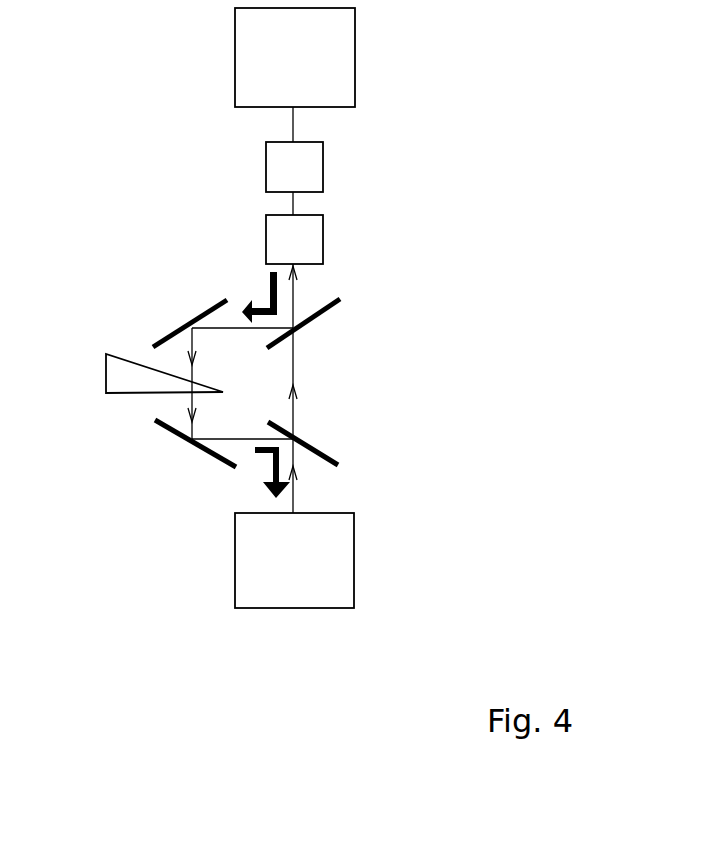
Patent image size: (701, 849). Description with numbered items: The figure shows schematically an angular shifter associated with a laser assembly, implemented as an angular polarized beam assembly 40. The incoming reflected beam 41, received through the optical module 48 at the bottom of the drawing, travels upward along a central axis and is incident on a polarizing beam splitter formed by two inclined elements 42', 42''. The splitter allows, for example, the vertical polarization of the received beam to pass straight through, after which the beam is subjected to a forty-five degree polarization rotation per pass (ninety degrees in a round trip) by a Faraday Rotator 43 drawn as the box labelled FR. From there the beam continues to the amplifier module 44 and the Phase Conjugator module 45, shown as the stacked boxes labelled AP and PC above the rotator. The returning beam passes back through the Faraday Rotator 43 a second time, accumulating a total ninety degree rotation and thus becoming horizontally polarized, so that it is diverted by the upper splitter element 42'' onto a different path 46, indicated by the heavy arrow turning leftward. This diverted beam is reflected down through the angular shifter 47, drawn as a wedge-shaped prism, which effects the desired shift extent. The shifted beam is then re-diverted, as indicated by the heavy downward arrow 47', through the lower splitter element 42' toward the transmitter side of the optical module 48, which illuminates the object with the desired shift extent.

The angular polarized beam assembly 40 is at (478, 498).
The incoming reflected beam 41 is at (295, 489).
The polarizing beam splitter 42' is at (326, 440).
The polarizing beam splitter 42'' is at (333, 323).
The Faraday Rotator 43 is at (323, 239).
The amplifier module 44 is at (266, 163).
The Phase Conjugator module 45 is at (235, 70).
The different path 46 is at (270, 292).
The angular shifter 47 is at (121, 375).
The re-diverted beam 47' is at (240, 479).
The optical module 48 is at (235, 560).